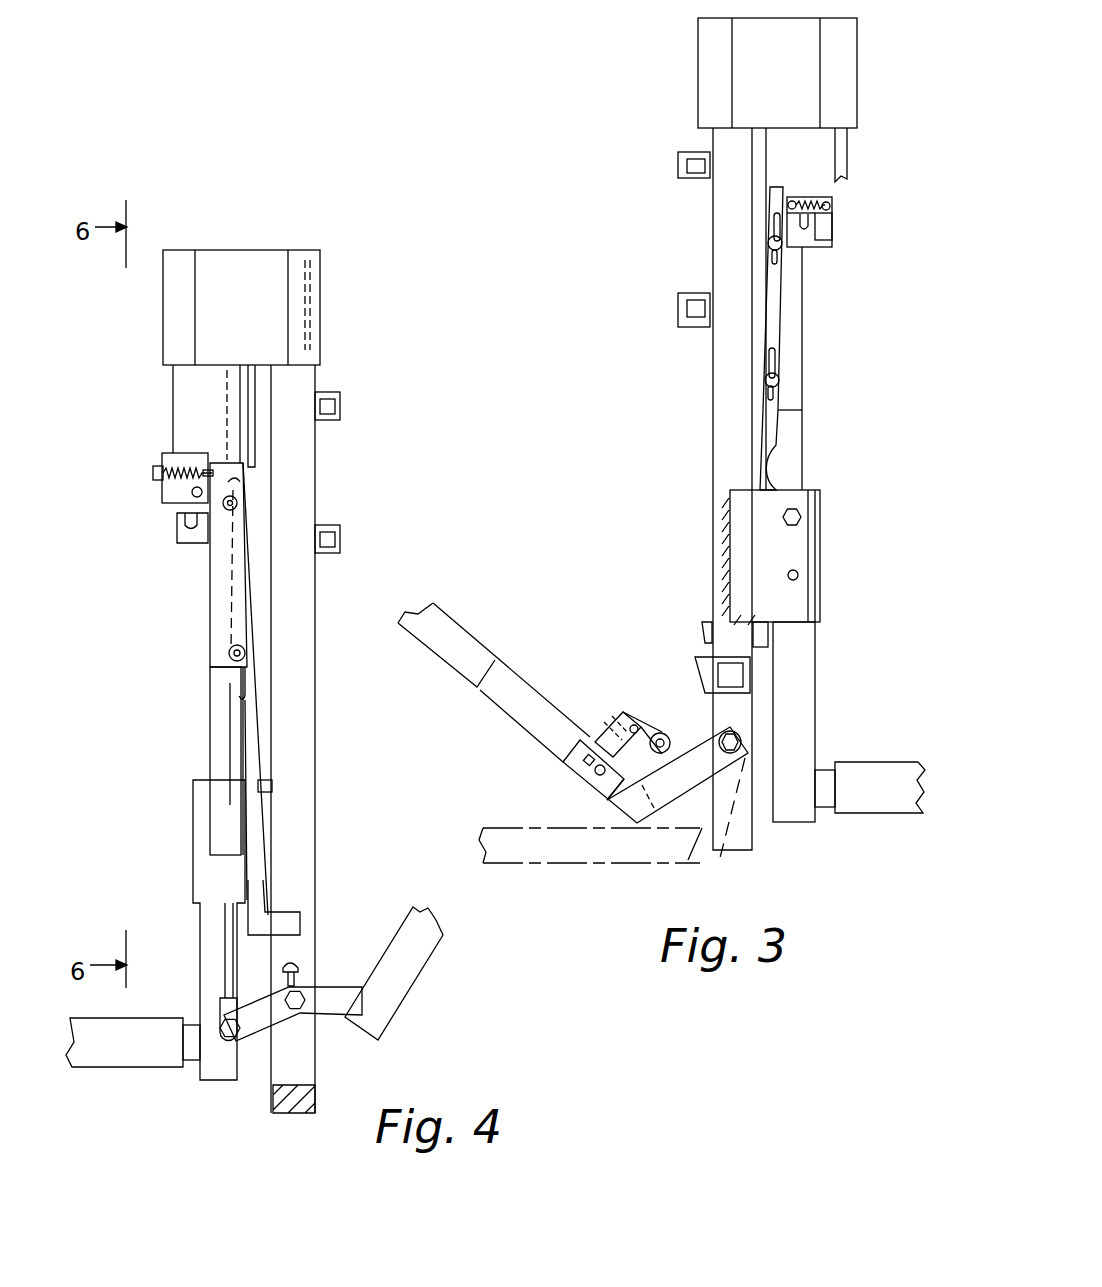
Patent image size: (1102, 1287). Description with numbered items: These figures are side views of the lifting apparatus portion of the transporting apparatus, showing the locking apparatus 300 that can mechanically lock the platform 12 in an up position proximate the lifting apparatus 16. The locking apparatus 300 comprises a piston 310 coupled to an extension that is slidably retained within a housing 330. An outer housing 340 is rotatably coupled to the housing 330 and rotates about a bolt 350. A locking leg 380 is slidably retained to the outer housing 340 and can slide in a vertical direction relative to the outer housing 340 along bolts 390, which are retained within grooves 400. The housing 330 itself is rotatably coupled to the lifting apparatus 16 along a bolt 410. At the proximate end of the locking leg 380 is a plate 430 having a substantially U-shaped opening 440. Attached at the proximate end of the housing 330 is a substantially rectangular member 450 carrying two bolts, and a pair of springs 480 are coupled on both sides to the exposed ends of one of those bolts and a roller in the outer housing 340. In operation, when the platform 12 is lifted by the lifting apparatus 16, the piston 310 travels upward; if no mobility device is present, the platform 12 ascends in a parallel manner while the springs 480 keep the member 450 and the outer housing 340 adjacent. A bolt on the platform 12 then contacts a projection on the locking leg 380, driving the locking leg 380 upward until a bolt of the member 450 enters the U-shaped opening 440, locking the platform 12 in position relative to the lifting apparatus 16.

In FIG. 3, the platform 12 is at (548, 680).
In FIG. 4, the platform 12 is at (434, 990).
In FIG. 3, the lifting apparatus 16 is at (846, 432).
In FIG. 4, the lifting apparatus 16 is at (348, 485).
In FIG. 3, the locking apparatus 300 is at (690, 420).
In FIG. 4, the locking apparatus 300 is at (180, 640).
In FIG. 4, the piston 310 is at (225, 887).
In FIG. 3, the housing 330 is at (795, 315).
In FIG. 4, the housing 330 is at (215, 717).
In FIG. 4, the outer housing 340 is at (210, 593).
In FIG. 4, the bolt 350 is at (246, 653).
In FIG. 3, the locking leg 380 is at (780, 284).
In FIG. 3, the bolts 390 is at (770, 243).
In FIG. 3, the grooves 400 is at (773, 225).
In FIG. 3, the bolt 410 is at (801, 517).
In FIG. 3, the plate 430 is at (800, 218).
In FIG. 3, the U-shaped opening 440 is at (835, 218).
In FIG. 3, the rectangular member 450 is at (830, 240).
In FIG. 3, the springs 480 is at (812, 200).
In FIG. 4, the springs 480 is at (168, 468).